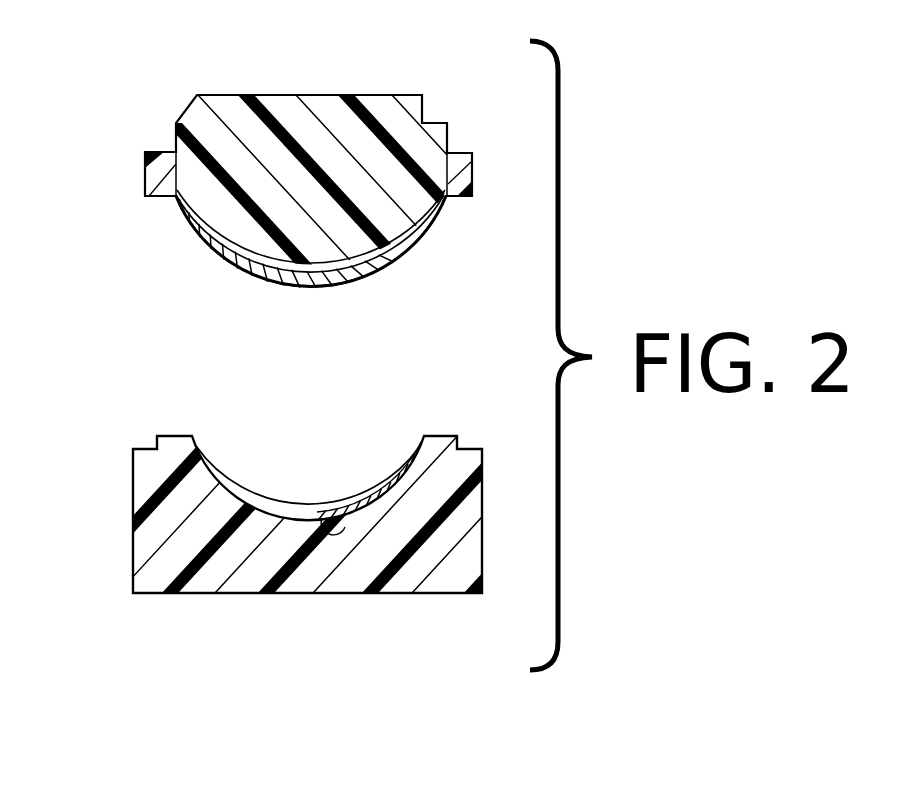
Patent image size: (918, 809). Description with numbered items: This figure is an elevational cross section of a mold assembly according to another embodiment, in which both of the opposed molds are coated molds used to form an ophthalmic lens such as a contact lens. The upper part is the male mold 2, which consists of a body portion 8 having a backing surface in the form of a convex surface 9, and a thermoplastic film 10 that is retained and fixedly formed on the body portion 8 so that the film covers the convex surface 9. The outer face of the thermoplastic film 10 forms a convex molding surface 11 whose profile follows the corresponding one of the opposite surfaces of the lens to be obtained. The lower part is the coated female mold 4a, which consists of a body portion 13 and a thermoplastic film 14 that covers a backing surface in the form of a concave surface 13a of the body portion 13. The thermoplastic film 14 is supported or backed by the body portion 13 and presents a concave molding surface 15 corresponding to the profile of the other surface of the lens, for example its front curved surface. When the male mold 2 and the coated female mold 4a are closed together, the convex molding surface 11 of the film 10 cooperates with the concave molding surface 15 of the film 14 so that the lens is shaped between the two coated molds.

The male mold 2 is at (319, 168).
The body portion 8 is at (378, 117).
The convex surface 9 is at (410, 236).
The thermoplastic film 10 is at (375, 262).
The convex molding surface 11 is at (237, 265).
The coated female mold 4a is at (375, 519).
The body portion 13 is at (402, 580).
The concave surface 13a is at (342, 512).
The thermoplastic film 14 is at (280, 515).
The concave molding surface 15 is at (350, 512).